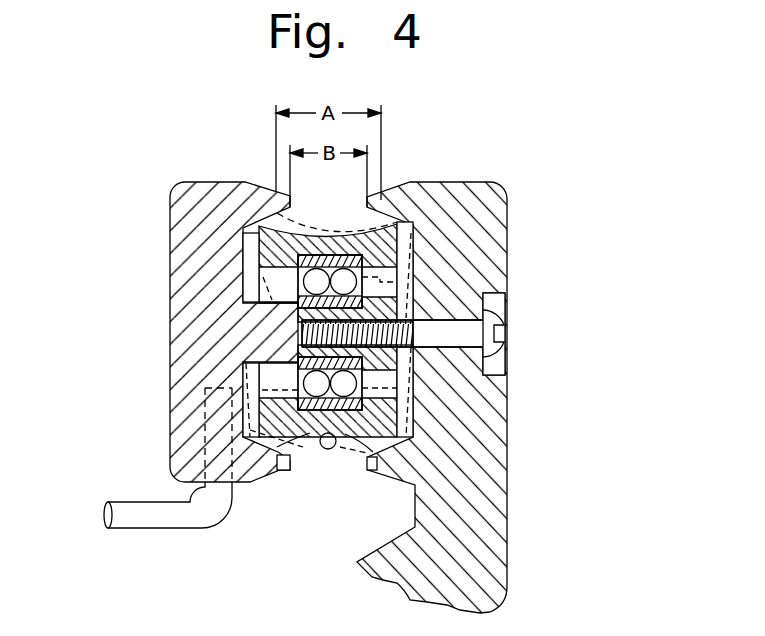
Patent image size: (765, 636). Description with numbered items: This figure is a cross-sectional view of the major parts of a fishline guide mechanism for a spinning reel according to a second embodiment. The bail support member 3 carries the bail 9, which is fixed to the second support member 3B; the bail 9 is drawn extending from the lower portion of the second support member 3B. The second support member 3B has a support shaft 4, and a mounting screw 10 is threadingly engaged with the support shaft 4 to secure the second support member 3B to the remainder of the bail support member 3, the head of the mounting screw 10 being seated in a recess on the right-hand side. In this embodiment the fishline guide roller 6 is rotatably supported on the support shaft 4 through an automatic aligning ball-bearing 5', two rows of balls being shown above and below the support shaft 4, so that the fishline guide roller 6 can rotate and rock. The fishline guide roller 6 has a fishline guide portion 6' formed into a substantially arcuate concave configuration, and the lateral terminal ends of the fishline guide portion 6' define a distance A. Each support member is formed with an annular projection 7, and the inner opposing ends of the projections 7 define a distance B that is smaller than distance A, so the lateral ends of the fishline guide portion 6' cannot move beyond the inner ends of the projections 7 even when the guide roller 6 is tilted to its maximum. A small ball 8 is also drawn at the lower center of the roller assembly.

The bail support member 3 is at (522, 176).
The second support member 3B is at (178, 332).
The support shaft 4 is at (405, 318).
The automatic aligning ball-bearing 5' is at (460, 346).
The fishline guide roller 6 is at (230, 337).
The fishline guide portion 6' is at (337, 208).
The annular projection 7 is at (281, 469).
The ball 8 is at (328, 450).
The bail 9 is at (130, 513).
The mounting screw 10 is at (500, 343).